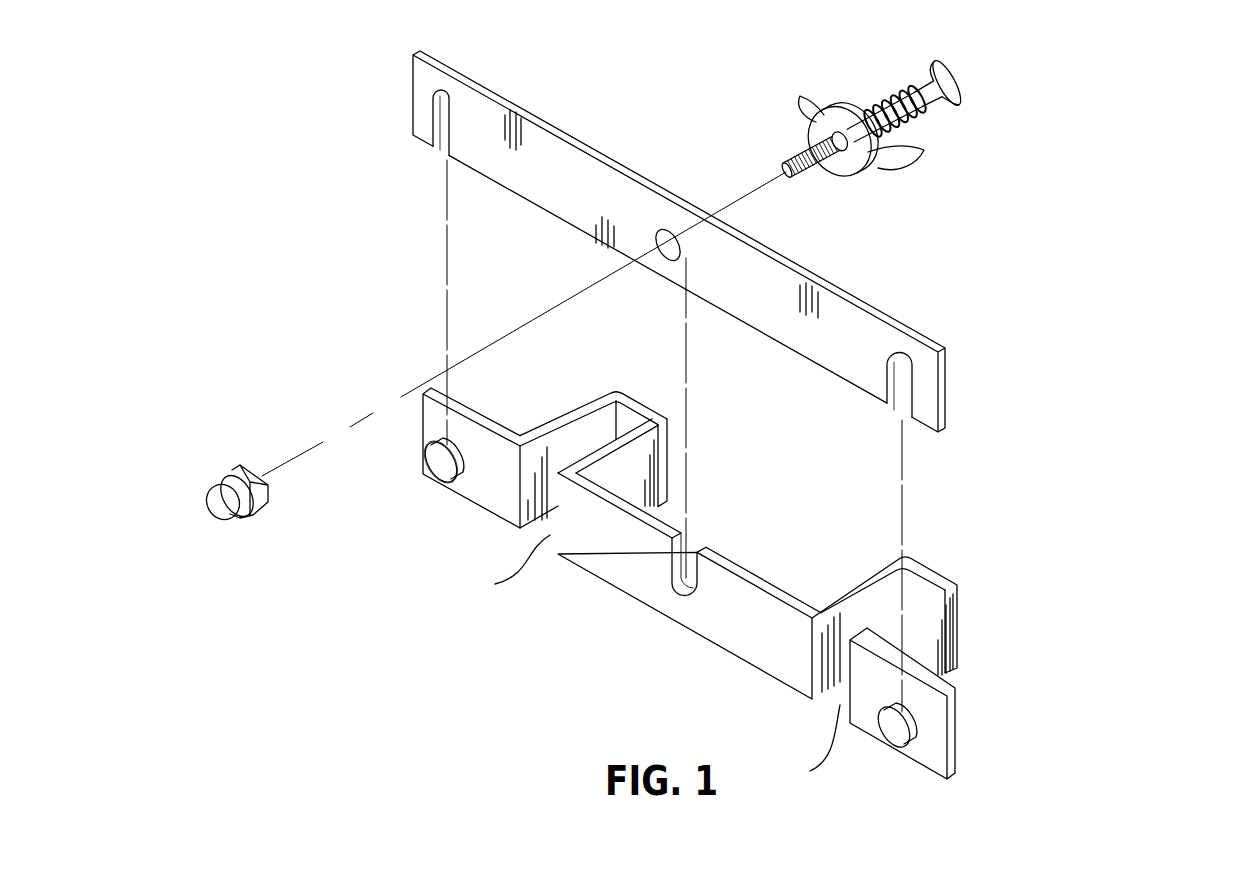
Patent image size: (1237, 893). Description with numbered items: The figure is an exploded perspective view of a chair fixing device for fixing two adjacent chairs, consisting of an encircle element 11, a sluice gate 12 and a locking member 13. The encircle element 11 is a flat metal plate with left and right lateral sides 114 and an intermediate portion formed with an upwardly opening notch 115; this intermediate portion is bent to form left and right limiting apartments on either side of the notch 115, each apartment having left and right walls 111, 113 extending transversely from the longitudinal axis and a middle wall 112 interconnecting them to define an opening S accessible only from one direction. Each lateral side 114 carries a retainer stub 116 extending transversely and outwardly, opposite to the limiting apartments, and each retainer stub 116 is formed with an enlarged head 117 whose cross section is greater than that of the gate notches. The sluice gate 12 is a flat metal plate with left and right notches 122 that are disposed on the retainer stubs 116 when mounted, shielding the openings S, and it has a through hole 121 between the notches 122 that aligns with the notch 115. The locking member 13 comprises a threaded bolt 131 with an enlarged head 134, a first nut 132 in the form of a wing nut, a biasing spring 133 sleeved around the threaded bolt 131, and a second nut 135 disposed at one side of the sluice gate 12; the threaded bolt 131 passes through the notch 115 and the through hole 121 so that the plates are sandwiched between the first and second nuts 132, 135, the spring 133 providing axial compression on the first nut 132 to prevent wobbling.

The encircle element 11 is at (700, 553).
The left wall 111 is at (676, 406).
The middle wall 112 is at (645, 406).
The right wall 113 is at (570, 407).
The lateral side 114 is at (470, 402).
The notch 115 is at (690, 553).
The retainer stub 116 is at (450, 476).
The enlarged head 117 is at (430, 476).
The sluice gate 12 is at (646, 247).
The through hole 121 is at (666, 230).
The notch 122 is at (446, 150).
The locking member 13 is at (900, 133).
The threaded bolt 131 is at (806, 170).
The first nut 132 is at (808, 105).
The biasing spring 133 is at (878, 108).
The enlarged head 134 is at (952, 84).
The second nut 135 is at (218, 467).